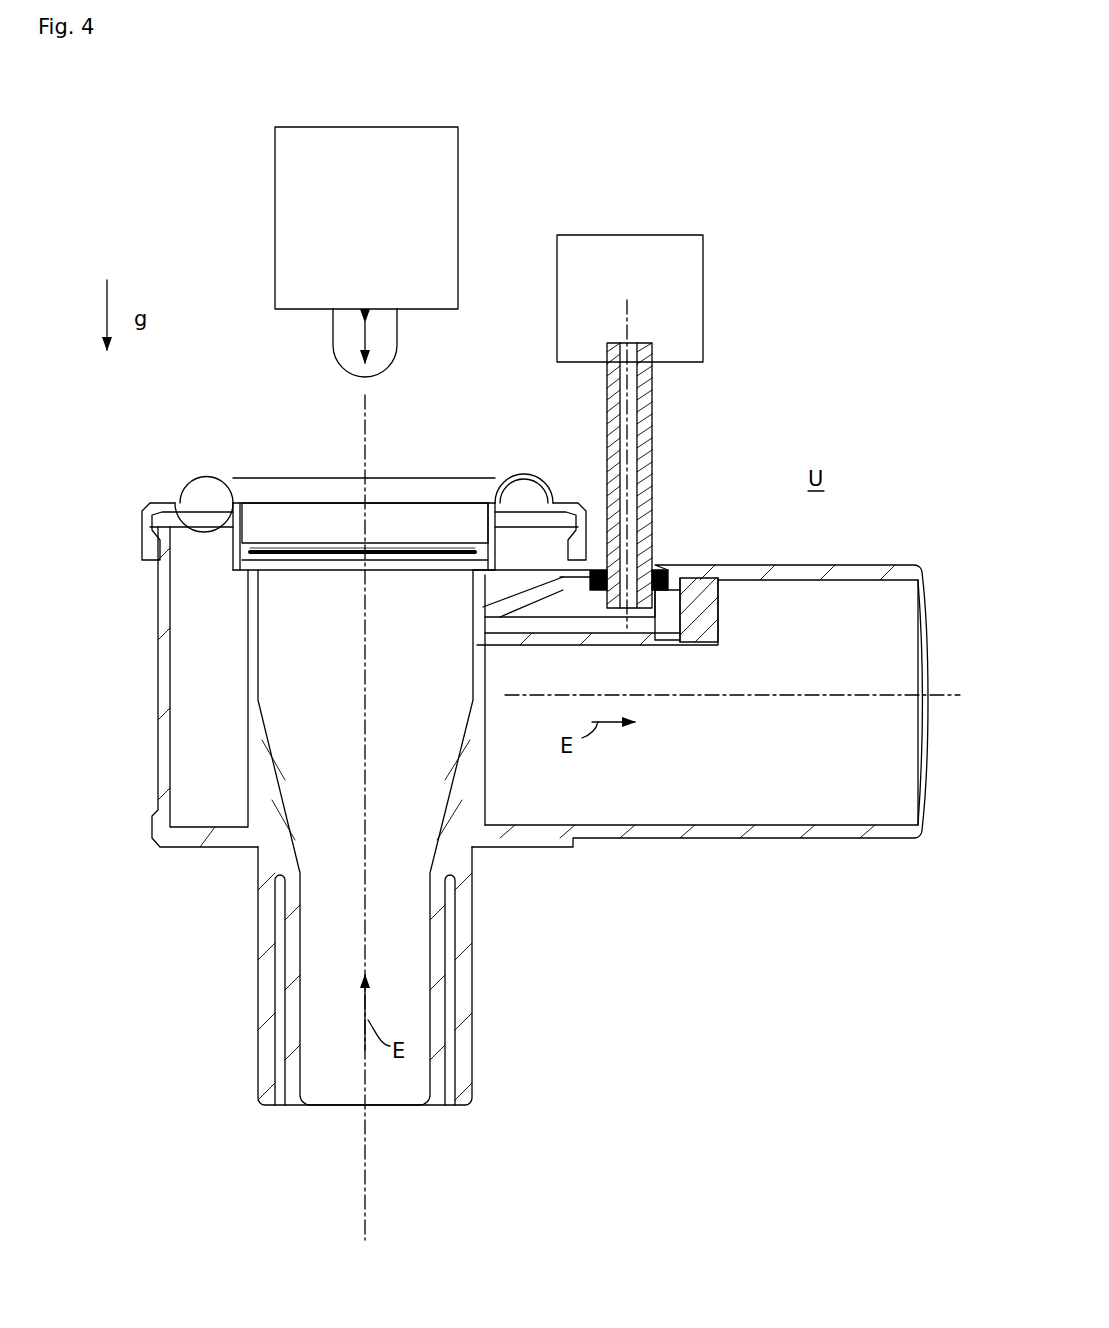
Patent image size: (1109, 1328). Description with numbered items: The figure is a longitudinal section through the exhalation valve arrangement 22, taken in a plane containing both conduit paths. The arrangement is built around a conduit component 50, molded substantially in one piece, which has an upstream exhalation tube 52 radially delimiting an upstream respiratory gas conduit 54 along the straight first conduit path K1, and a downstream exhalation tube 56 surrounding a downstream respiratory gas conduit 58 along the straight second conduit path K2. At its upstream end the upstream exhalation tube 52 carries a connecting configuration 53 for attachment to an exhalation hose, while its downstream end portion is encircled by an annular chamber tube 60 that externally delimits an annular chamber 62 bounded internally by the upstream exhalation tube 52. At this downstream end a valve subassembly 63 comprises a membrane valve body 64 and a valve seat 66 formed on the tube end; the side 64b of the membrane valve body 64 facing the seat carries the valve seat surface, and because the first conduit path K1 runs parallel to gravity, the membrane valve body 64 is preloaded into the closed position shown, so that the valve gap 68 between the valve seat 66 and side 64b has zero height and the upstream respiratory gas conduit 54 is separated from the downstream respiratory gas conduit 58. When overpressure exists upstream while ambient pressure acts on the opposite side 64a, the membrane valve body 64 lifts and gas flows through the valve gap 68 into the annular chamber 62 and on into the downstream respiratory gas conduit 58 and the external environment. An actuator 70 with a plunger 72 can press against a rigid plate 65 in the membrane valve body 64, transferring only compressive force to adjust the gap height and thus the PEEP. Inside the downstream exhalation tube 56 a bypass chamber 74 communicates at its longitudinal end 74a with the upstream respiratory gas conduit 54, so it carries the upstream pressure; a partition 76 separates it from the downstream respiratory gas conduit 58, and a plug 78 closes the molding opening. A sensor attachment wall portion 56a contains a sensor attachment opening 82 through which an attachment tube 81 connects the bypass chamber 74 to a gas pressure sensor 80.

The exhalation valve arrangement 22 is at (575, 145).
The conduit component 50 is at (108, 583).
The upstream exhalation tube 52 is at (468, 972).
The connecting configuration 53 is at (447, 1108).
The upstream respiratory gas conduit 54 is at (406, 928).
The downstream exhalation tube 56 is at (682, 842).
The sensor attachment wall portion 56a is at (668, 555).
The downstream respiratory gas conduit 58 is at (725, 773).
The annular chamber tube 60 is at (160, 720).
The annular chamber 62 is at (218, 688).
The valve subassembly 63 is at (202, 455).
The membrane valve body 64 is at (400, 482).
The side facing away from valve seat 64a is at (330, 536).
The side facing toward valve seat 64b is at (348, 570).
The rigid plate 65 is at (348, 548).
The valve seat 66 is at (250, 570).
The valve gap 68 is at (238, 578).
The actuator 70 is at (375, 227).
The plunger 72 is at (393, 333).
The bypass chamber 74 is at (585, 623).
The longitudinal end of bypass chamber 74a is at (493, 618).
The partition 76 is at (605, 640).
The plug 78 is at (700, 605).
The gas pressure sensor 80 is at (636, 288).
The attachment tube 81 is at (650, 437).
The sensor attachment opening 82 is at (603, 560).
The first conduit path K1 is at (368, 1196).
The second conduit path K2 is at (903, 695).